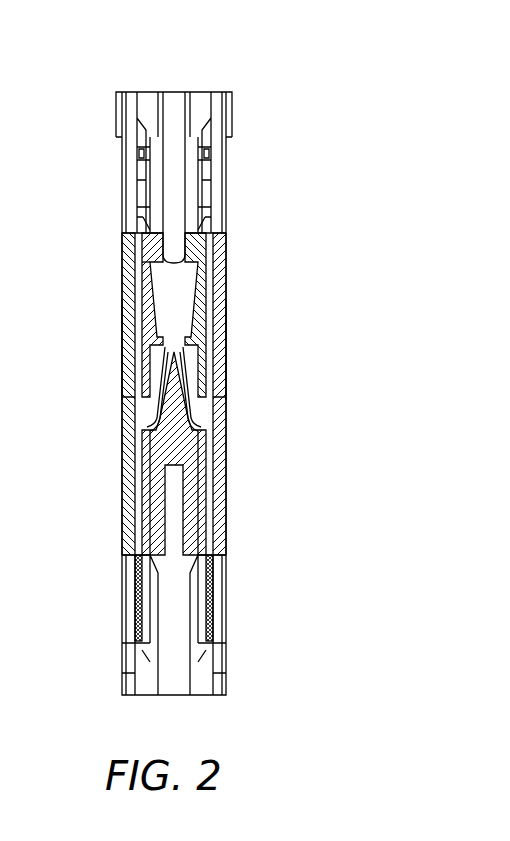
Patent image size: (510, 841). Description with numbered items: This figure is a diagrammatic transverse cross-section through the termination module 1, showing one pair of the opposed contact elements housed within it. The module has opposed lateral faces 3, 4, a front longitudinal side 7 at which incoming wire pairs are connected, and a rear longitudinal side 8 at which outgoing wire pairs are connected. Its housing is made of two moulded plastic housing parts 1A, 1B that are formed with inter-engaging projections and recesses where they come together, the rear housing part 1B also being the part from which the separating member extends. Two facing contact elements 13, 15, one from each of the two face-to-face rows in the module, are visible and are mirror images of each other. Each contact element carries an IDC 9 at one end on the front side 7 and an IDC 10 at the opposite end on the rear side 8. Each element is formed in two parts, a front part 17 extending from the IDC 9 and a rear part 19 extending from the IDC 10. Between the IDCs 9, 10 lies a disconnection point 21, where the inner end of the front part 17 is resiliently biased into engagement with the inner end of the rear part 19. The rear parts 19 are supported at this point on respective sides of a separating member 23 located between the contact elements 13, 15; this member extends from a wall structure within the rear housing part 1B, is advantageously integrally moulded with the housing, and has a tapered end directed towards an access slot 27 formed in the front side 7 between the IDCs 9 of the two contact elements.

The termination module 1 is at (190, 391).
The housing part 1A is at (227, 190).
The housing part 1B is at (226, 570).
The lateral face 3 is at (232, 346).
The lateral face 4 is at (116, 346).
The longitudinal side 7 is at (172, 298).
The longitudinal side 8 is at (176, 648).
The IDC 9 is at (138, 152).
The IDC 10 is at (140, 617).
The contact element 13 is at (206, 262).
The contact element 15 is at (142, 262).
The front part 17 is at (212, 218).
The rear part 19 is at (218, 453).
The disconnection point 21 is at (156, 380).
The separating member 23 is at (180, 406).
The access slot 27 is at (174, 100).